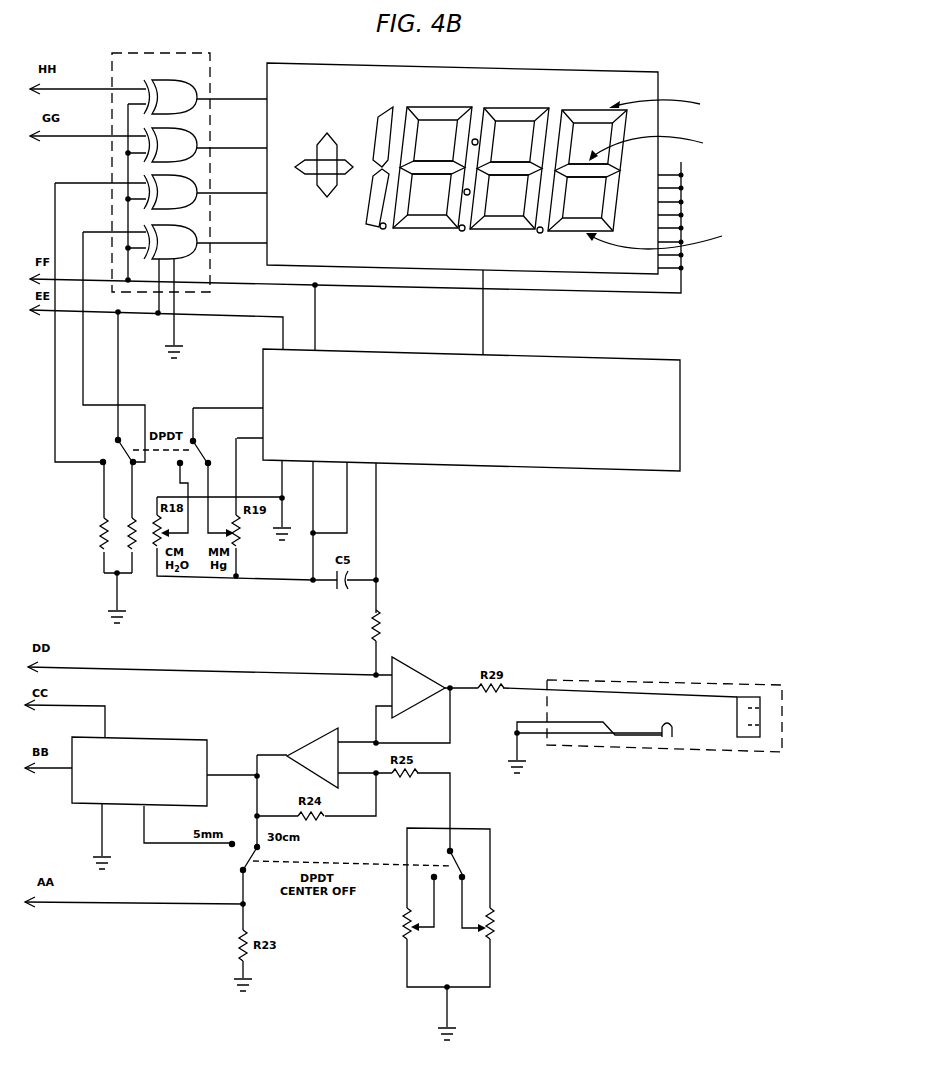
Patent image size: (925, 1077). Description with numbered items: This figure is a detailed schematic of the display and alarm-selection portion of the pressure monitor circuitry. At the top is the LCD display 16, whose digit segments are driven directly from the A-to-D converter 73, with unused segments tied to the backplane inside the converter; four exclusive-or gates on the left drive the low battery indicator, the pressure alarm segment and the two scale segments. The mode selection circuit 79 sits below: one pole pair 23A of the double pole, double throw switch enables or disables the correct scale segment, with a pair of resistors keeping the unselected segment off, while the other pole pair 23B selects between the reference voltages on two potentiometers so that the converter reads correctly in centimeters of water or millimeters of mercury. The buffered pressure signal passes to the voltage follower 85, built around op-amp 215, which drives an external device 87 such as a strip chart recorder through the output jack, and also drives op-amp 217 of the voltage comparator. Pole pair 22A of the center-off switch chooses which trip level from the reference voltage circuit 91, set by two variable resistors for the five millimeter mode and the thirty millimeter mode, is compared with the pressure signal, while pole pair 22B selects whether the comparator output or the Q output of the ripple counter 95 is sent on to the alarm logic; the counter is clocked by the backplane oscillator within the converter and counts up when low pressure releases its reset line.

The LCD display 16 is at (636, 78).
The A-to-D converter 73 is at (607, 462).
The mode selection circuit 79 is at (89, 528).
The voltage follower 85 is at (383, 627).
The external device 87 is at (645, 682).
The reference voltage circuit 91 is at (500, 894).
The ripple counter 95 is at (143, 742).
The op-amp 215 is at (392, 688).
The op-amp 217 is at (308, 750).
The pole pair of switch 22 22A is at (464, 861).
The pole pair of switch 22 22B is at (234, 860).
The pole pair of switch 23 23A is at (107, 454).
The pole pair of switch 23 23B is at (208, 448).